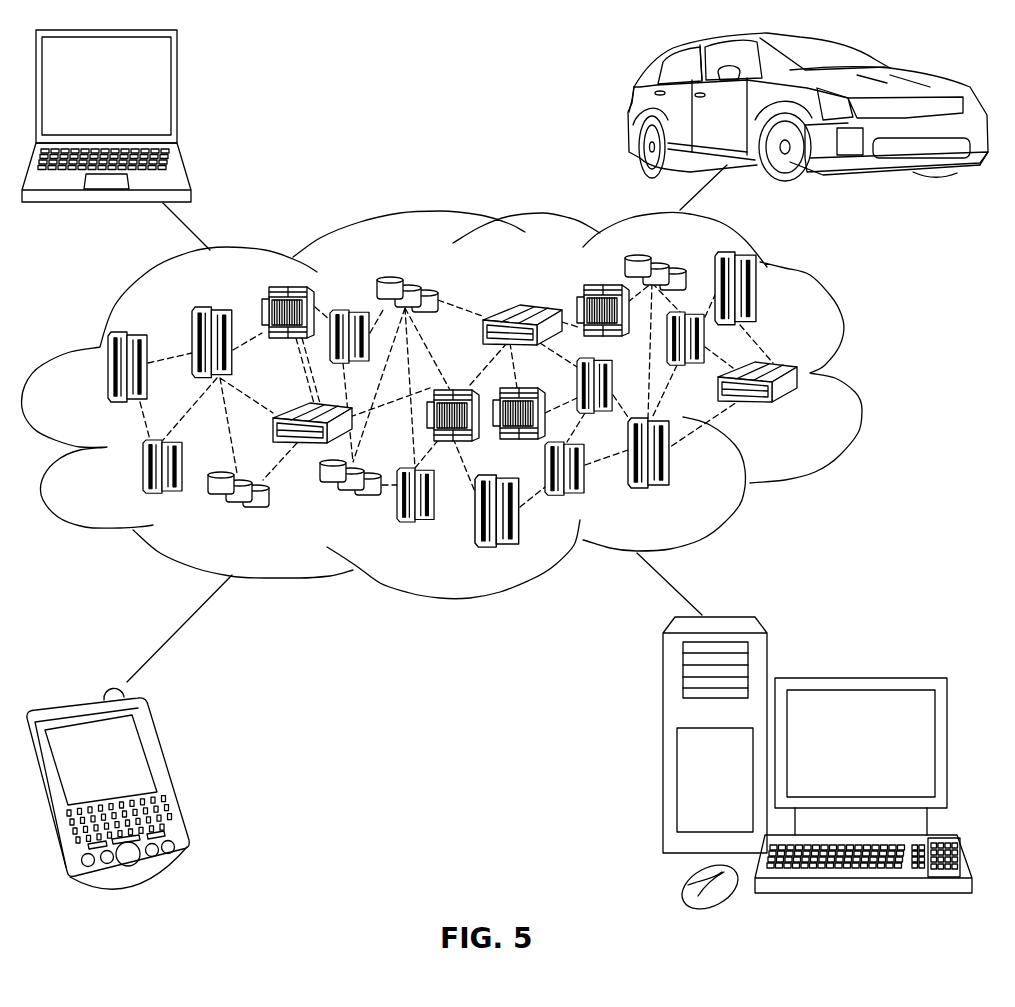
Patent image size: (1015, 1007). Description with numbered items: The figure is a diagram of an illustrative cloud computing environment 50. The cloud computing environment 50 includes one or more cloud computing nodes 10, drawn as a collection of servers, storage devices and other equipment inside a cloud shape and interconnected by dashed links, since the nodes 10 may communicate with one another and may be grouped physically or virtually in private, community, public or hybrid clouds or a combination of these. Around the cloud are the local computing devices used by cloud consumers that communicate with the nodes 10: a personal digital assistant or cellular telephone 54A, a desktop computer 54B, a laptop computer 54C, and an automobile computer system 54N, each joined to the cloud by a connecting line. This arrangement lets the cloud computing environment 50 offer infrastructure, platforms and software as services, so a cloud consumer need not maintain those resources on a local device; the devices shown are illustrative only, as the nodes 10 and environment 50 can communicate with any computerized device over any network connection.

The cloud computing node 10 is at (800, 410).
The cloud computing environment 50 is at (857, 380).
The personal digital assistant or cellular telephone 54A is at (167, 770).
The desktop computer 54B is at (858, 675).
The laptop computer 54C is at (178, 95).
The automobile computer system 54N is at (633, 112).